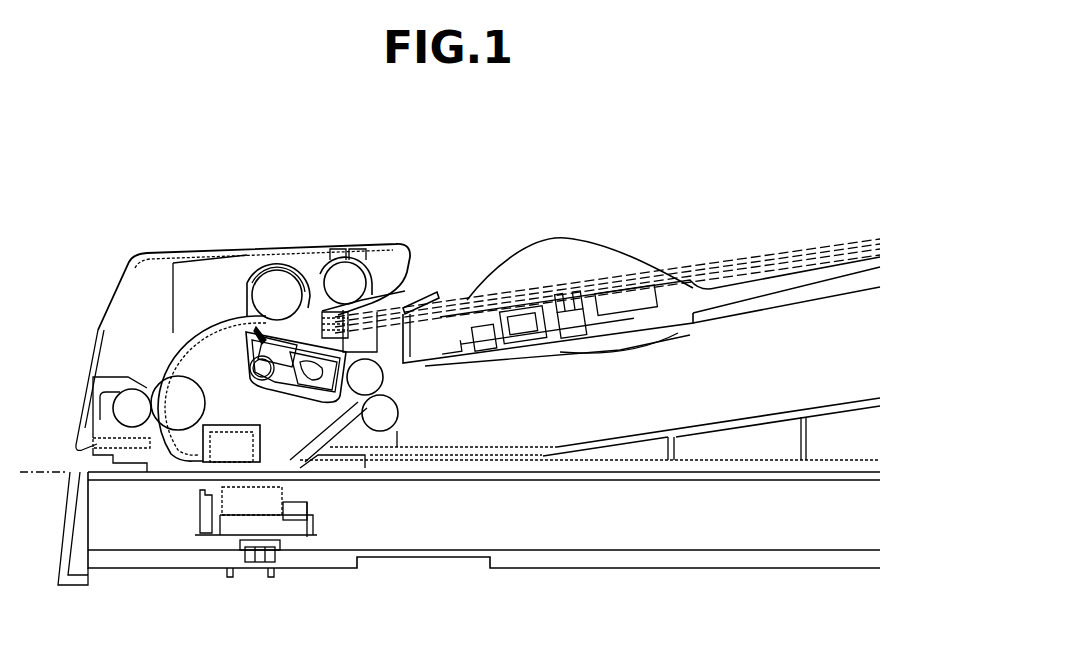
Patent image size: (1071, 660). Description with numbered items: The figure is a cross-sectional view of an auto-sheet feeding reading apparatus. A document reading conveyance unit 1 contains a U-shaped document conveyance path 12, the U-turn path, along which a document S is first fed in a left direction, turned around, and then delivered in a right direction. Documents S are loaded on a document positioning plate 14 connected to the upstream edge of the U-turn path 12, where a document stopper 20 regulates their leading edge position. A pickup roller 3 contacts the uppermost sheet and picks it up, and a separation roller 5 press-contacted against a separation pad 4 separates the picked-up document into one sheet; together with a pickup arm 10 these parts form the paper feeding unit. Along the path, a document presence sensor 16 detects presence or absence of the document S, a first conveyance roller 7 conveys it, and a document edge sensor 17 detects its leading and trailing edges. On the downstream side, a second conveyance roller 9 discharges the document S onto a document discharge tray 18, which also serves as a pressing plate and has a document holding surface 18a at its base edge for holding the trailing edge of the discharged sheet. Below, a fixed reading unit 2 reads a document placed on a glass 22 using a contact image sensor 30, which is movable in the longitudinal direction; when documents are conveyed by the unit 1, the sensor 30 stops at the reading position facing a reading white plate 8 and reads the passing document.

The document reading conveyance unit 1 is at (135, 283).
The fixed reading unit 2 is at (455, 538).
The pickup roller 3 is at (348, 262).
The separation pad 4 is at (303, 327).
The separation roller 5 is at (277, 280).
The first conveyance roller 7 is at (183, 387).
The reading white plate 8 is at (240, 450).
The second conveyance roller 9 is at (378, 382).
The pickup arm 10 is at (257, 267).
The document conveyance path 12 is at (157, 353).
The document positioning plate 14 is at (727, 287).
The document presence sensor 16 is at (400, 298).
The document edge sensor 17 is at (107, 427).
The document discharge tray 18 is at (527, 446).
The document holding surface 18a is at (400, 437).
The document stopper 20 is at (318, 312).
The glass 22 is at (400, 476).
The contact image sensor 30 is at (232, 507).
The document S is at (780, 248).